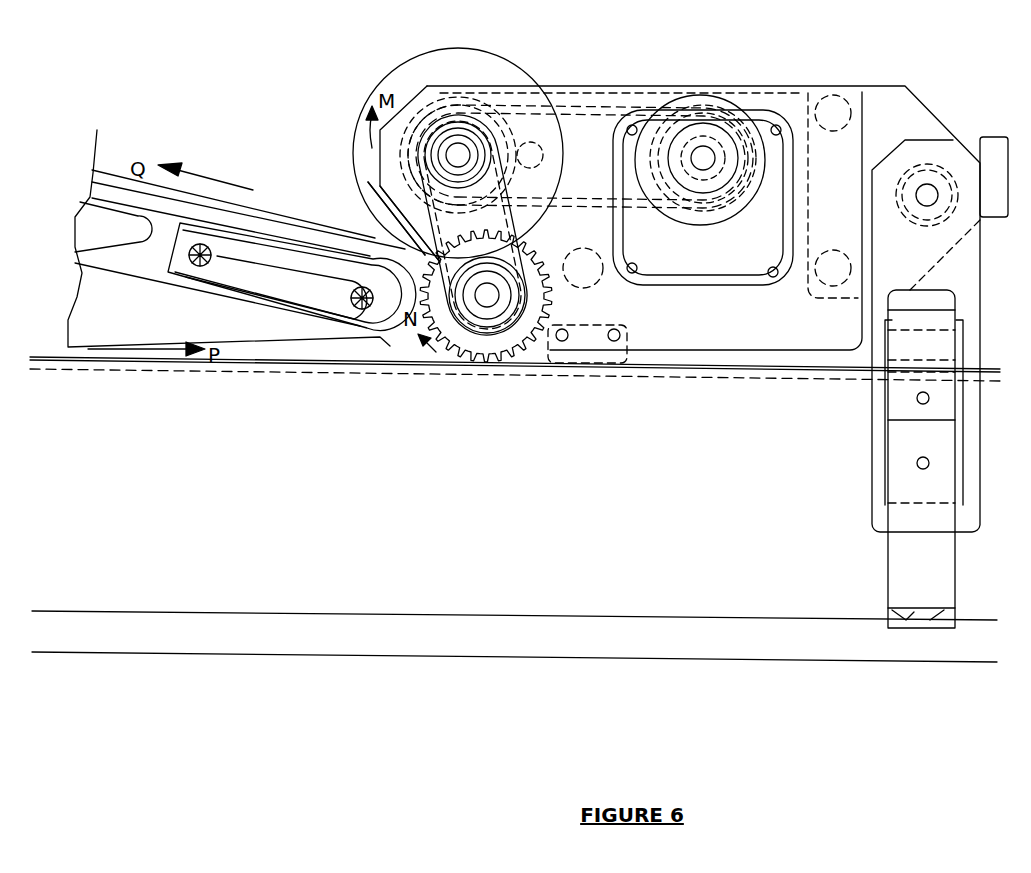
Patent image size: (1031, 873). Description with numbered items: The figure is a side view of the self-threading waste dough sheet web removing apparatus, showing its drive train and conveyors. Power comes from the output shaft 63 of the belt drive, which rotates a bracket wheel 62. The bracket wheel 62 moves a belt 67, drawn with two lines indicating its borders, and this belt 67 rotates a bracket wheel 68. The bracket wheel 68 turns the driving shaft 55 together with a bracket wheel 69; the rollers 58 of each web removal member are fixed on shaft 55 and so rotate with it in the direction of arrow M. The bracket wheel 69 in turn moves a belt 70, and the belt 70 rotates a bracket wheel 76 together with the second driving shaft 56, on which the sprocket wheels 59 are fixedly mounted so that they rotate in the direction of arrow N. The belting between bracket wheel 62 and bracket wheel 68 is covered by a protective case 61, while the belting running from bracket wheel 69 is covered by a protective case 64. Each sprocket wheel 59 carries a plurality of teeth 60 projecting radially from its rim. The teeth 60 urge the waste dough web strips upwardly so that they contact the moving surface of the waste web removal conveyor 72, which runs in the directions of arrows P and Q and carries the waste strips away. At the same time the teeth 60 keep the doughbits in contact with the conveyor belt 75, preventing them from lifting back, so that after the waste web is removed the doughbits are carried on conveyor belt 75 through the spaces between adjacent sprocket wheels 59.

The driving shaft 55 is at (443, 150).
The driving shaft 56 is at (487, 298).
The roller 58 is at (365, 97).
The sprocket wheel 59 is at (432, 307).
The teeth 60 is at (527, 327).
The protective case 61 is at (577, 88).
The bracket wheel 62 is at (697, 118).
The output shaft 63 is at (708, 158).
The protective case 64 is at (418, 270).
The belt 67 is at (606, 120).
The bracket wheel 68 is at (418, 138).
The bracket wheel 69 is at (447, 153).
The belt 70 is at (440, 200).
The waste web removal conveyor 72 is at (257, 233).
The conveyor belt 75 is at (733, 378).
The bracket wheel 76 is at (478, 315).